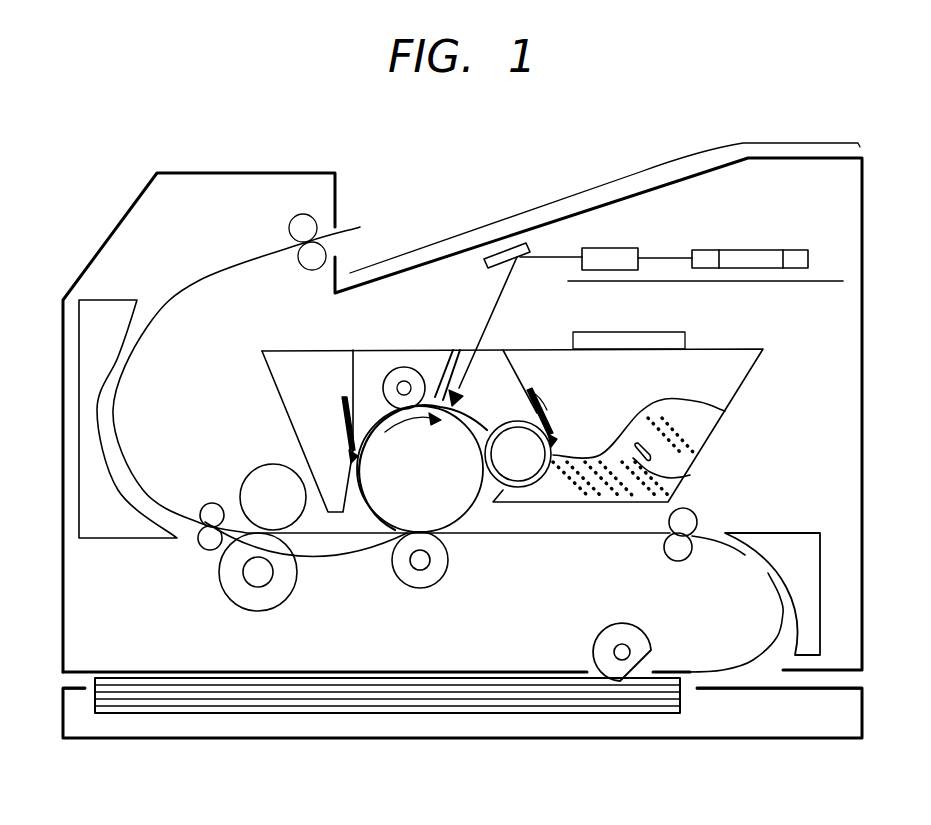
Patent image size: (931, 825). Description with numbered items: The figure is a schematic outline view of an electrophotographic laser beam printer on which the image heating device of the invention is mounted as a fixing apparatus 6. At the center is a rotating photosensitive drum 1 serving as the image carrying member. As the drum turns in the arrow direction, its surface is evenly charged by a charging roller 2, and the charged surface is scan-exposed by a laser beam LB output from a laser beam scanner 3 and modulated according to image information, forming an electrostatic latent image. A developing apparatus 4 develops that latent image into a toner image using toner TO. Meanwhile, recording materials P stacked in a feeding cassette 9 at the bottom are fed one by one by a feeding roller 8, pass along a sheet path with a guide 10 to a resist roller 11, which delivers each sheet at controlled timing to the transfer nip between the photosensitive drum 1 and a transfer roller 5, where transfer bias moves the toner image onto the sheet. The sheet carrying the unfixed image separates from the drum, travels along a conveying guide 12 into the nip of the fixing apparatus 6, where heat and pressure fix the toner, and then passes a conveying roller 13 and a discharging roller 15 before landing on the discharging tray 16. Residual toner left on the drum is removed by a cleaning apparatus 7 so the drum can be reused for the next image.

The photosensitive drum 1 is at (468, 513).
The charging roller 2 is at (389, 373).
The laser beam scanner 3 is at (608, 247).
The developing apparatus 4 is at (537, 490).
The transfer roller 5 is at (430, 585).
The fixing apparatus 6 is at (241, 492).
The cleaning apparatus 7 is at (297, 438).
The feeding roller 8 is at (607, 624).
The feeding cassette 9 is at (335, 677).
The guide 10 is at (767, 543).
The resist roller 11 is at (689, 558).
The conveying guide 12 is at (352, 557).
The conveying roller 13 is at (116, 298).
The discharging roller 15 is at (289, 222).
The discharging tray 16 is at (473, 243).
The laser beam LB is at (476, 350).
The toner TO is at (580, 458).
The recording material P is at (505, 678).